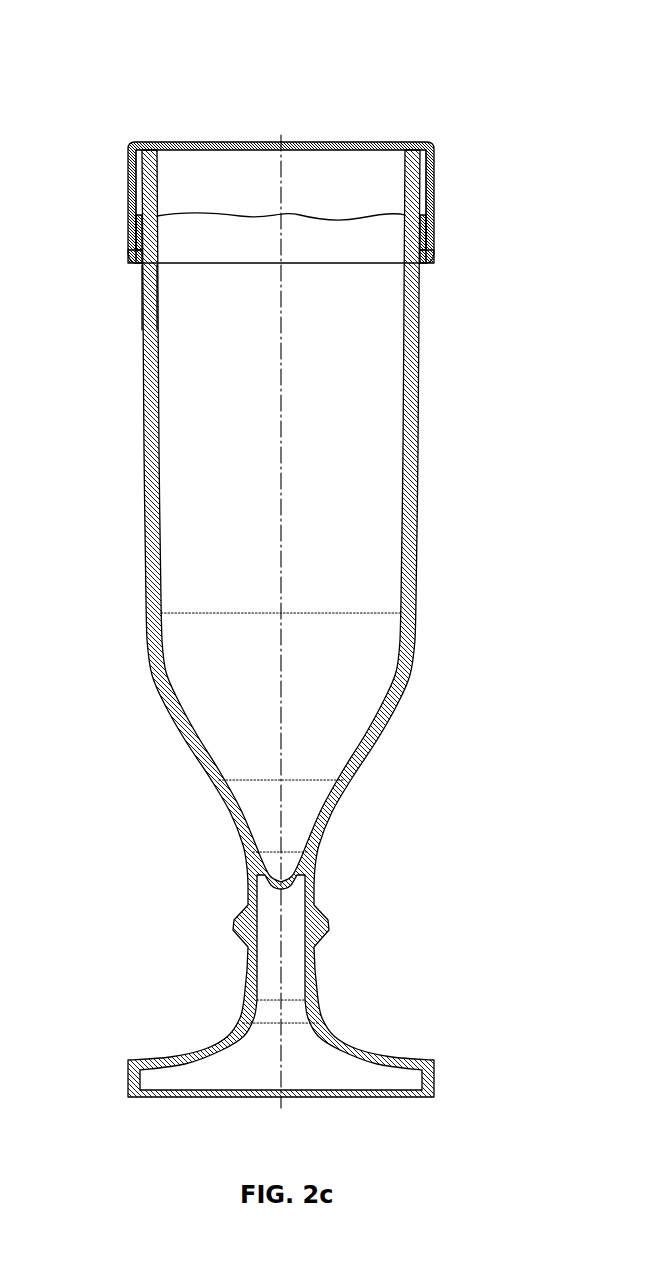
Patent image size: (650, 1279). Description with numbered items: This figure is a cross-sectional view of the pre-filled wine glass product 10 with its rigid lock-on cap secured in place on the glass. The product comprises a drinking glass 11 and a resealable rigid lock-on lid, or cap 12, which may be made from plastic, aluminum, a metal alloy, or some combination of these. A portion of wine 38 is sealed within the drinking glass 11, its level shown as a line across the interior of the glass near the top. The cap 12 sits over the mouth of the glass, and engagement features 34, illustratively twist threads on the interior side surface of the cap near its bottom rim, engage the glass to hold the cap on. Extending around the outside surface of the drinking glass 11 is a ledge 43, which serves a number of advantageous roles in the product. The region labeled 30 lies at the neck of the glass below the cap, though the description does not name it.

The pre-filled wine glass product 10 is at (136, 98).
The drinking glass 11 is at (146, 408).
The cap 12 is at (435, 185).
The neck portion 30 is at (110, 297).
The engagement features 34 is at (133, 222).
The portion of wine 38 is at (331, 216).
The ledge 43 is at (430, 262).